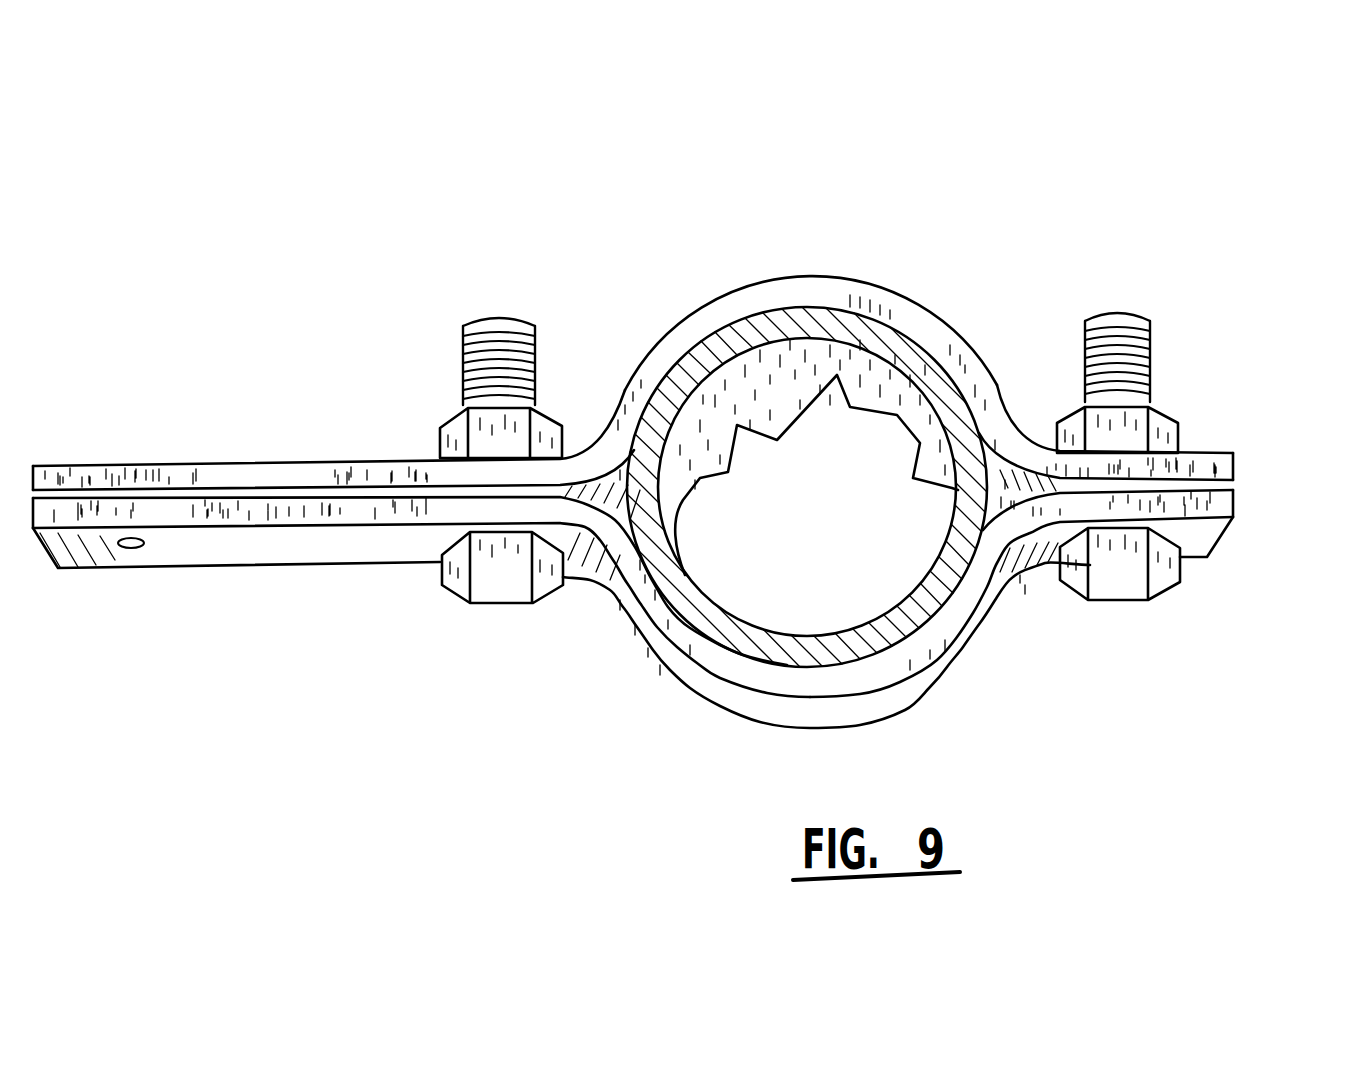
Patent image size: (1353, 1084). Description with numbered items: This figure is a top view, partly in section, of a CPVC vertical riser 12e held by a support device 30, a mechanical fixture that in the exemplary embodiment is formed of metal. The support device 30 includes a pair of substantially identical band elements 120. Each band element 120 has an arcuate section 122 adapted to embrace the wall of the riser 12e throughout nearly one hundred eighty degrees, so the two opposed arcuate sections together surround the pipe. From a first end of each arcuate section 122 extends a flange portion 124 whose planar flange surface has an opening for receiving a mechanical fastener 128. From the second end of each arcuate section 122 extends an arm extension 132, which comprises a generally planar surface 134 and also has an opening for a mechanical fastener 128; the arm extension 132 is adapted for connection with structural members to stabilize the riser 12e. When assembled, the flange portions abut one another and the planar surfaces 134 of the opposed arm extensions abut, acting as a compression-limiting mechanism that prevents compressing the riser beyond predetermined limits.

The support device 30 is at (237, 546).
The vertical riser 12e is at (757, 400).
The band element 120 is at (1198, 467).
The arcuate section 122 is at (797, 278).
The flange portion 124 is at (1065, 410).
The mechanical fastener 128 is at (497, 322).
The arm extension 132 is at (168, 472).
The planar surface 134 is at (290, 492).